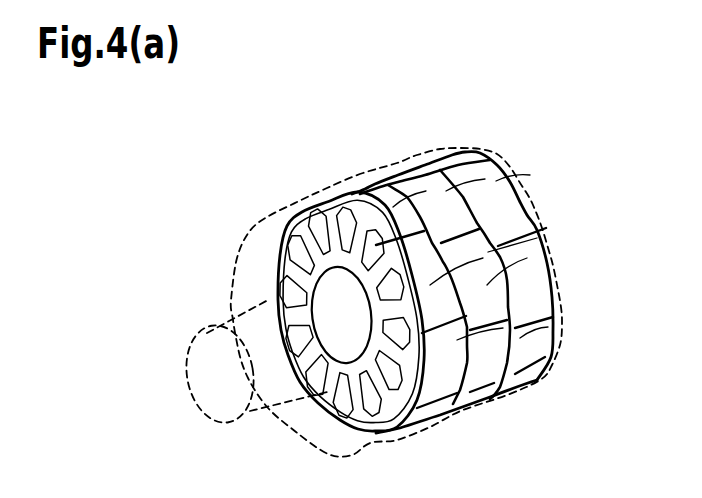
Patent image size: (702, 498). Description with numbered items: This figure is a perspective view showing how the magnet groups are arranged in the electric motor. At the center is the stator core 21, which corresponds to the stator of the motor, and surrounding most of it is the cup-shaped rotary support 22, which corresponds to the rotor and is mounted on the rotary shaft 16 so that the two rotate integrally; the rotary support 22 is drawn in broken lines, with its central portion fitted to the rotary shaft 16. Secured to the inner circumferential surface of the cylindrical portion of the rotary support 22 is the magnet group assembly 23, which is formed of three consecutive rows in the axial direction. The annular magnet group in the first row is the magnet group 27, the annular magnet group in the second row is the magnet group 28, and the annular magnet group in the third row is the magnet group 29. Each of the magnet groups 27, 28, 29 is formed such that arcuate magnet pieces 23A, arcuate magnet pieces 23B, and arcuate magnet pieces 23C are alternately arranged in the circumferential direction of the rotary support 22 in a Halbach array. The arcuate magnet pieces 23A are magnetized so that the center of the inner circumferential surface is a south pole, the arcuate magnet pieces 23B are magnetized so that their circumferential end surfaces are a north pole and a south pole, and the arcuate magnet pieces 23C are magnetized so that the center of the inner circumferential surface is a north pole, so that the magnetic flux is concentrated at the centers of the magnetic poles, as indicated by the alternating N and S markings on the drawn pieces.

The rotary shaft 16 is at (203, 397).
The stator core 21 is at (284, 263).
The rotary support 22 is at (252, 228).
The magnet group assembly 23 is at (450, 235).
The arcuate magnet piece 23A is at (488, 176).
The arcuate magnet piece 23B is at (486, 268).
The arcuate magnet piece 23C is at (517, 330).
The magnet group 27 is at (357, 194).
The magnet group 28 is at (393, 187).
The magnet group 29 is at (499, 229).